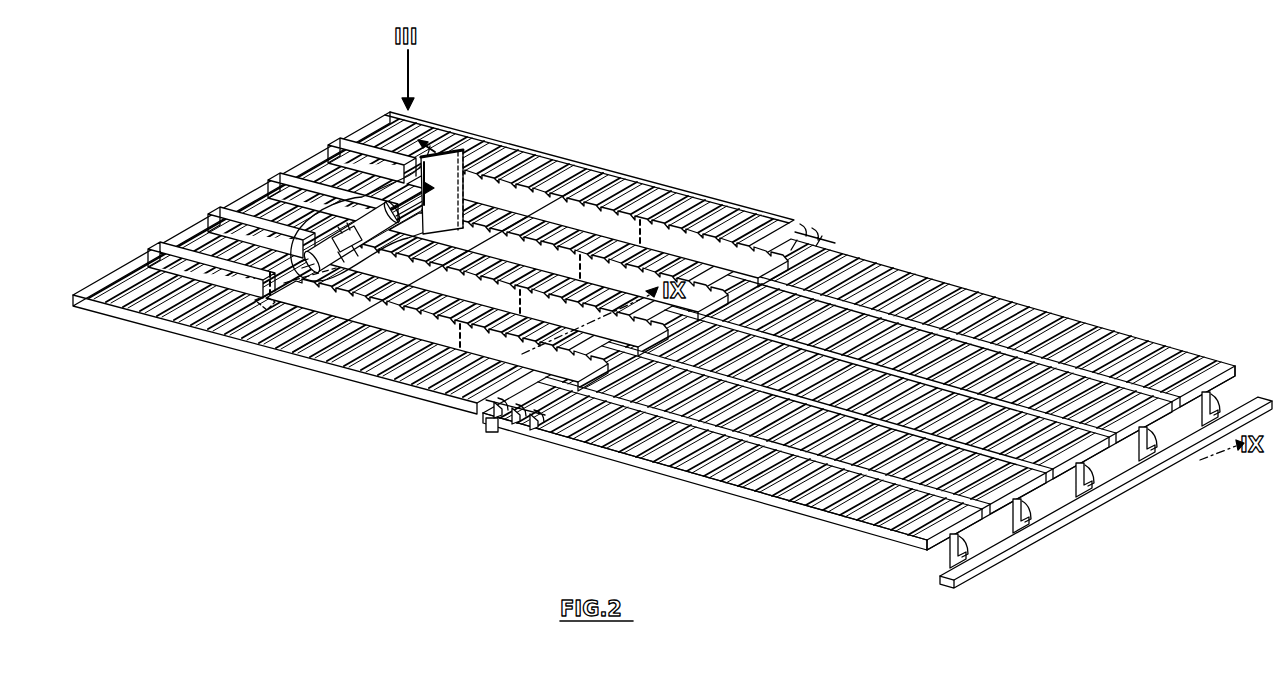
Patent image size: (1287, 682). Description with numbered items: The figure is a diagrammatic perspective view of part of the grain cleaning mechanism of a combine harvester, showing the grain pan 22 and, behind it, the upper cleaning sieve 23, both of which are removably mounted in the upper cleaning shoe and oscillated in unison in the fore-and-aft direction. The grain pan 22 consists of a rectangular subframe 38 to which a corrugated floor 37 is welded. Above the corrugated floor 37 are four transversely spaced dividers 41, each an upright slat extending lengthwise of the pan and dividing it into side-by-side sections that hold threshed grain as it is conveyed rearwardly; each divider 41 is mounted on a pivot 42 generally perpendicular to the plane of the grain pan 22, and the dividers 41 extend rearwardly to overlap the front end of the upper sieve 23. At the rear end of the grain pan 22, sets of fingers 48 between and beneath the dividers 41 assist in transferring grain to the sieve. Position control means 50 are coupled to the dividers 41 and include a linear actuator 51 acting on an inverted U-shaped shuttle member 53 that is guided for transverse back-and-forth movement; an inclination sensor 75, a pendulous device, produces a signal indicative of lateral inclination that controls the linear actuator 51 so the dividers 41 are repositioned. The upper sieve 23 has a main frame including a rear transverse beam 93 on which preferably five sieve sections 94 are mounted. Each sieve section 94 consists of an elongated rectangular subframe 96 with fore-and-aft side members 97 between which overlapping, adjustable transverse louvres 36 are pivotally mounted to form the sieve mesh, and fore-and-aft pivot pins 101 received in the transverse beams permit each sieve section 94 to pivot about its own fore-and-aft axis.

The grain pan 22 is at (549, 154).
The upper cleaning sieve 23 is at (1010, 292).
The transverse louvres 36 is at (877, 268).
The corrugated floor 37 is at (296, 356).
The rectangular subframe 38 is at (116, 320).
The dividers 41 is at (300, 172).
The pivot 42 is at (463, 342).
The fingers 48 is at (510, 424).
The position control means 50 is at (317, 274).
The linear actuator 51 is at (371, 249).
The shuttle member 53 is at (227, 326).
The inclination sensor 75 is at (473, 204).
The rear transverse beam 93 is at (997, 564).
The sieve sections 94 is at (895, 542).
The subframe 96 is at (653, 466).
The fore-and-aft side members 97 is at (826, 518).
The pivot pins 101 is at (1246, 347).